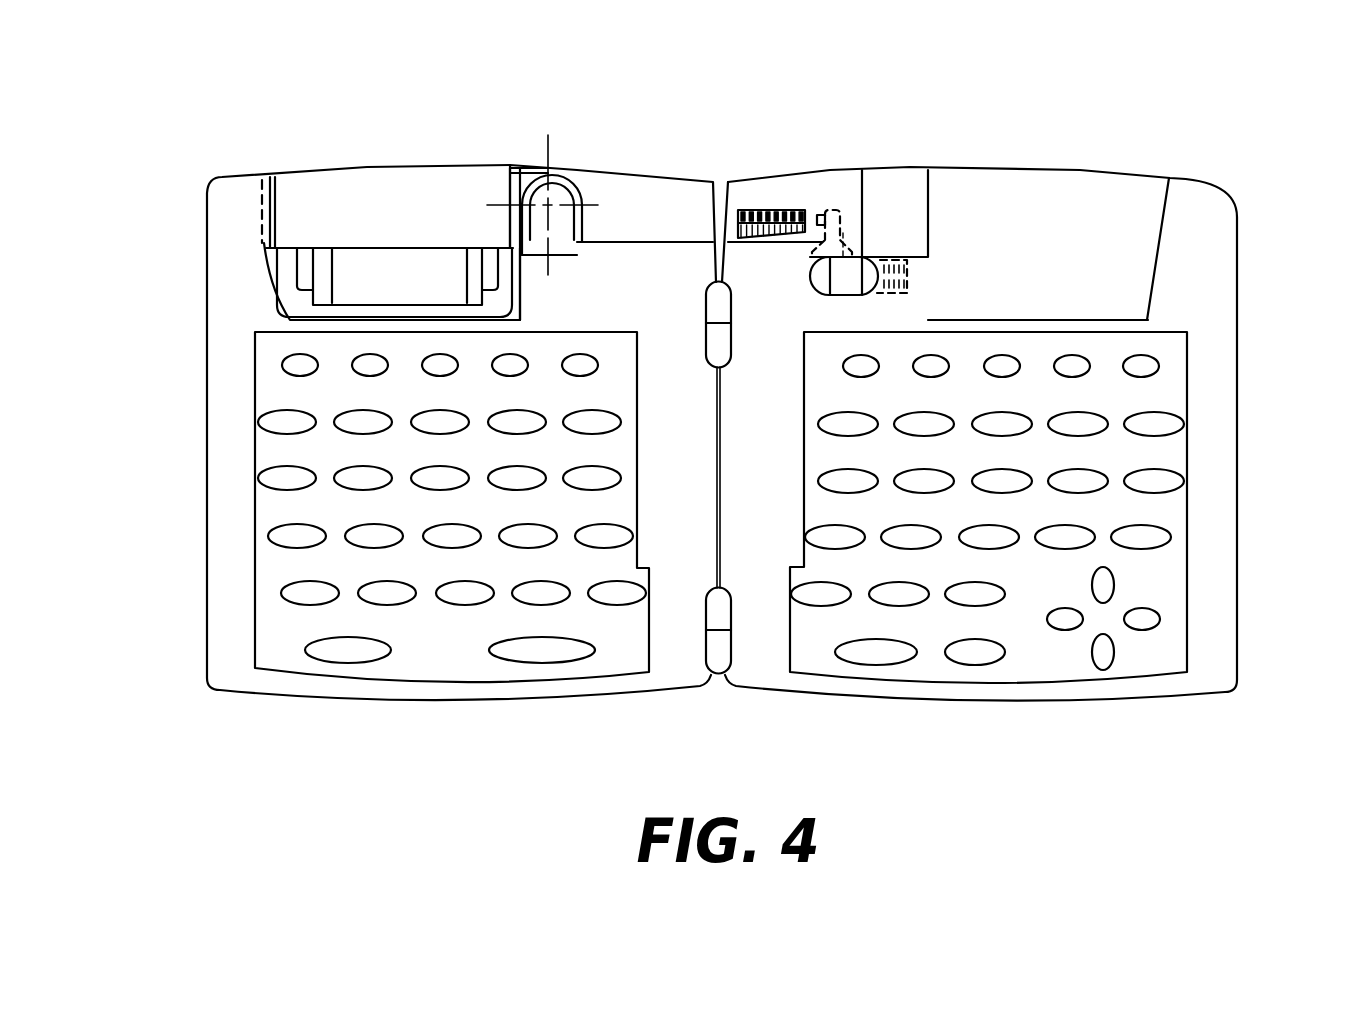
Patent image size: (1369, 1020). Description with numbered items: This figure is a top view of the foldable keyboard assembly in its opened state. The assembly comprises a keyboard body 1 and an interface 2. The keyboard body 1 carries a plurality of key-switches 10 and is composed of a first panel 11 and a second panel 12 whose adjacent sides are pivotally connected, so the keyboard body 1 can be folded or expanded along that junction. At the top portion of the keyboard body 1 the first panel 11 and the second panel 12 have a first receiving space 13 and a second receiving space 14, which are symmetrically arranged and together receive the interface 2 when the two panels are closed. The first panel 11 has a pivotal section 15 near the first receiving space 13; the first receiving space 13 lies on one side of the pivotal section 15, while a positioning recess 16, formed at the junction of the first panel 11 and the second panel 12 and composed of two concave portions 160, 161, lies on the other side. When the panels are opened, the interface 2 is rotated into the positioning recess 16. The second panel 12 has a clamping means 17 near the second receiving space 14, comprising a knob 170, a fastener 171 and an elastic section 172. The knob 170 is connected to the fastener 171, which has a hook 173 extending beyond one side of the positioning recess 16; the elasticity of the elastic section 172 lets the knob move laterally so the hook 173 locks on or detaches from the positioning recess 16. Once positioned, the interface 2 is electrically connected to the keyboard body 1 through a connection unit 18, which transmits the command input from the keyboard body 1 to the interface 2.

The keyboard body 1 is at (1276, 168).
The interface 2 is at (327, 208).
The key-switches 10 is at (1159, 481).
The first panel 11 is at (453, 696).
The second panel 12 is at (1003, 695).
The first receiving space 13 is at (280, 287).
The second receiving space 14 is at (1170, 248).
The pivotal section 15 is at (558, 214).
The positioning recess 16 is at (675, 95).
The concave portion 160 is at (655, 197).
The concave portion 161 is at (781, 190).
The clamping means 17 is at (890, 243).
The knob 170 is at (847, 288).
The fastener 171 is at (840, 211).
The elastic section 172 is at (907, 273).
The hook 173 is at (822, 235).
The connection unit 18 is at (738, 217).